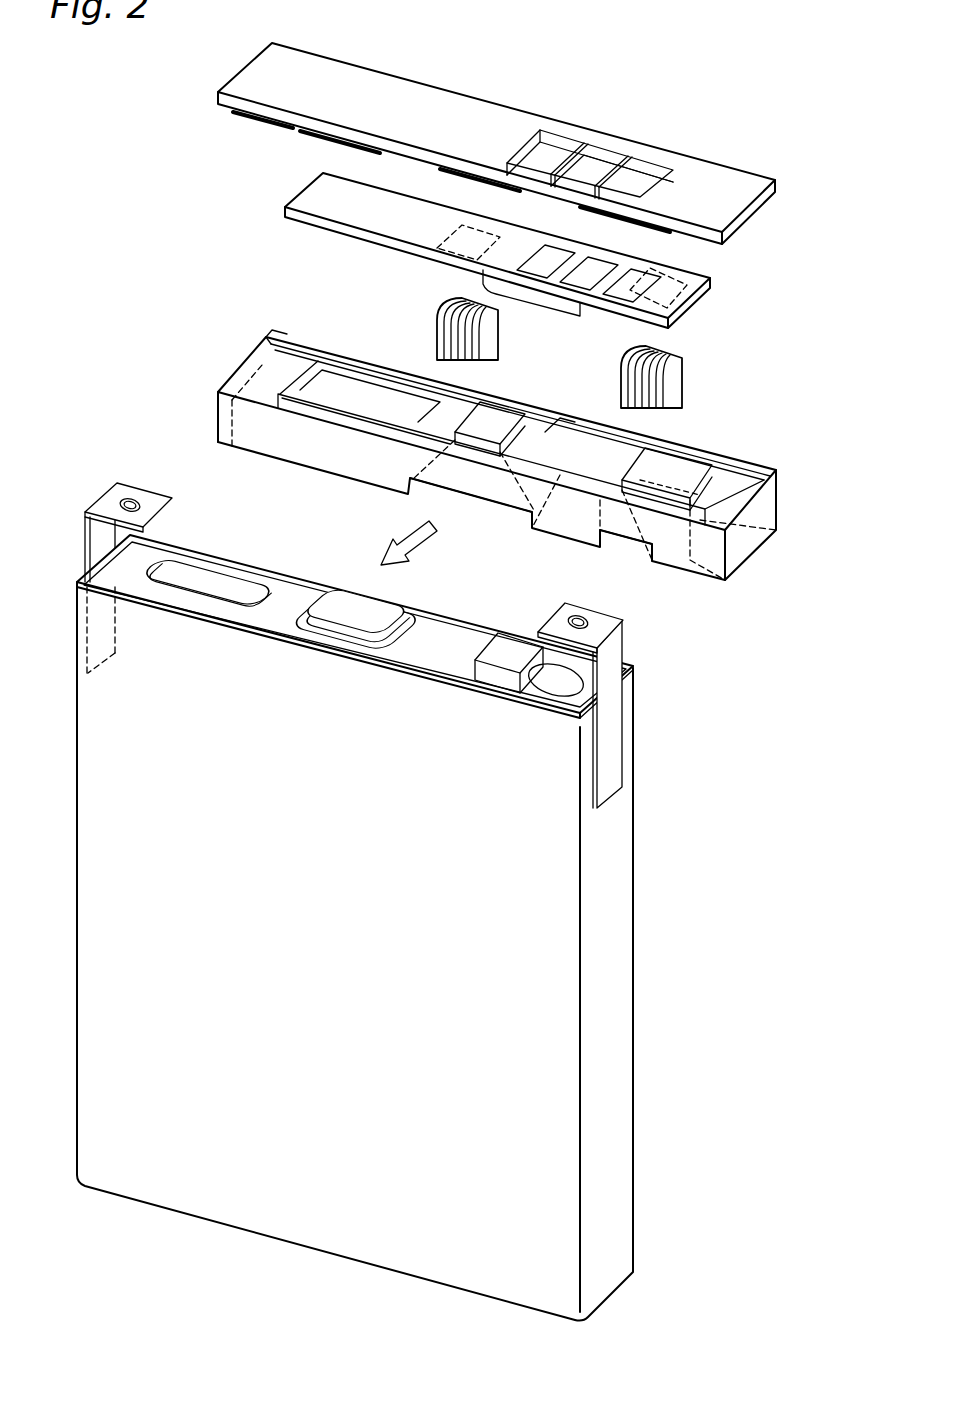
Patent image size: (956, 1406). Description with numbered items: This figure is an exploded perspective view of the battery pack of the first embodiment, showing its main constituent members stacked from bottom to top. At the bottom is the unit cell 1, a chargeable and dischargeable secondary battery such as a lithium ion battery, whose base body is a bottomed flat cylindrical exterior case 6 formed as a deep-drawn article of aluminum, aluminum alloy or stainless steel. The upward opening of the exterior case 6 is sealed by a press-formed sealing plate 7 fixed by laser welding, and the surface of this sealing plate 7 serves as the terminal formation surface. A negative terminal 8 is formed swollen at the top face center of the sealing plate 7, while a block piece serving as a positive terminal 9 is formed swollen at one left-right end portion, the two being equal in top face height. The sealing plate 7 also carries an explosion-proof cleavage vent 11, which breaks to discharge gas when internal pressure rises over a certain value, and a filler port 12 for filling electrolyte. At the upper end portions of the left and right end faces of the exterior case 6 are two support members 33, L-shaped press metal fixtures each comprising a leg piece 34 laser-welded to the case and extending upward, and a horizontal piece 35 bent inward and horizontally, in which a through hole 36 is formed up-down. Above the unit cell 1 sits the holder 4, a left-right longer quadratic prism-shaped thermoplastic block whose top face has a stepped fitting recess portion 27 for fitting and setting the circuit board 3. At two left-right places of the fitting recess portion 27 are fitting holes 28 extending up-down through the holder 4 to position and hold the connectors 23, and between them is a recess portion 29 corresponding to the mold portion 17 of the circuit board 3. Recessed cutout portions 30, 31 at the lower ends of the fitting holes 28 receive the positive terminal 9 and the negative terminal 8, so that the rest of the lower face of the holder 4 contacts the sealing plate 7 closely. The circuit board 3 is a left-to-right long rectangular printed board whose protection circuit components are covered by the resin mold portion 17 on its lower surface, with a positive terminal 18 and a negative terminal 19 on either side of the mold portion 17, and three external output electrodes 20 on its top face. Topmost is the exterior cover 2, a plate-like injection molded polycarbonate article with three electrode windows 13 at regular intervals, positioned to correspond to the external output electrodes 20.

The unit cell 1 is at (368, 882).
The exterior cover 2 is at (480, 85).
The circuit board 3 is at (283, 185).
The holder 4 is at (222, 360).
The exterior case 6 is at (78, 878).
The sealing plate 7 is at (442, 655).
The negative terminal 8 is at (345, 604).
The positive terminal 9 is at (515, 657).
The cleavage vent 11 is at (212, 590).
The filler port 12 is at (552, 683).
The electrode windows 13 is at (545, 160).
The mold portion 17 is at (548, 297).
The positive terminal 18 is at (670, 302).
The negative terminal 19 is at (445, 252).
The external output electrodes 20 is at (560, 252).
The connectors 23 is at (445, 332).
The fitting recess portion 27 is at (346, 392).
The fitting holes 28 is at (480, 416).
The recess portion 29 is at (520, 428).
The recessed cutout portion 30 is at (620, 545).
The recessed cutout portion 31 is at (462, 500).
The support members 33 is at (368, 625).
The leg piece 34 is at (612, 728).
The horizontal piece 35 is at (556, 628).
The through holes 36 is at (588, 620).